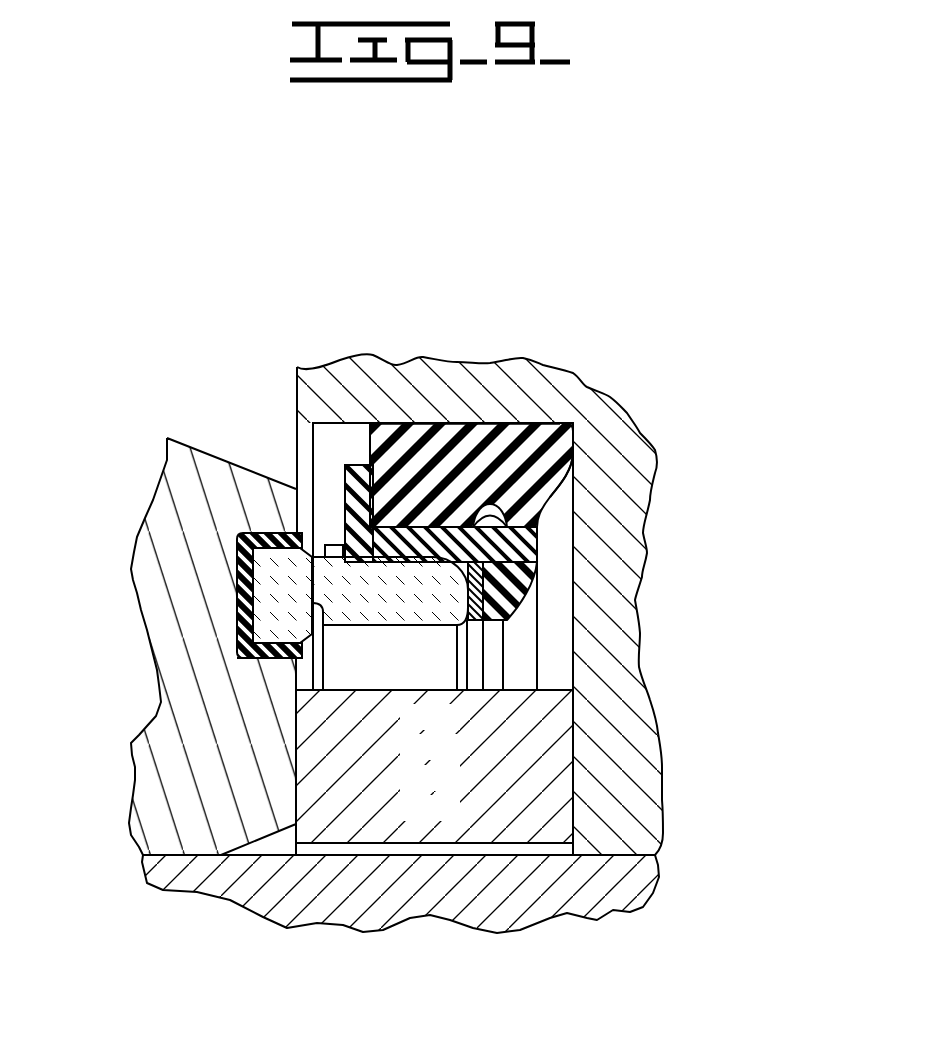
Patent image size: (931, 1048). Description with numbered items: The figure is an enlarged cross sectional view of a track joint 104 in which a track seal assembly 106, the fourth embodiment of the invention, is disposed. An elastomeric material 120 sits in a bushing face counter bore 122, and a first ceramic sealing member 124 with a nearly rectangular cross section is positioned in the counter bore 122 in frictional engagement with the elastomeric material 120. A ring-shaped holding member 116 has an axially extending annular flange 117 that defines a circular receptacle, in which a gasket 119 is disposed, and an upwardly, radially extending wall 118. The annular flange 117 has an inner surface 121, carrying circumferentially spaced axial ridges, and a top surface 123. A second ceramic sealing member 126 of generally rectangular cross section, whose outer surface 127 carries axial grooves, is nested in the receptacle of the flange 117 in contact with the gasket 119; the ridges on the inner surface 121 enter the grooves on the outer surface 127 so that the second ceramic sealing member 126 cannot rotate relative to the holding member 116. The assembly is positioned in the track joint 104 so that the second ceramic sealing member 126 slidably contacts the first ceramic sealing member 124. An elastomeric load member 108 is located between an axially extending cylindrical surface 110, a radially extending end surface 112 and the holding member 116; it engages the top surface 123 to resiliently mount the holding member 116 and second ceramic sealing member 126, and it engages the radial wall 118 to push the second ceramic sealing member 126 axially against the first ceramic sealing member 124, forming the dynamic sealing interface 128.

The track joint 104 is at (285, 460).
The track seal assembly 106 is at (347, 448).
The elastomeric load member 108 is at (542, 433).
The axial extending cylindrical surface 110 is at (452, 437).
The radially extending end surface 112 is at (575, 452).
The holding member 116 is at (495, 672).
The axially extending annular flange 117 is at (540, 538).
The radially extending wall 118 is at (347, 488).
The gasket 119 is at (470, 610).
The elastomeric material 120 is at (263, 656).
The inner surface 121 is at (517, 590).
The bushing face counter bore 122 is at (227, 589).
The top surface 123 is at (525, 498).
The first ceramic sealing member 124 is at (274, 622).
The second ceramic sealing member 126 is at (395, 598).
The outer surface 127 is at (332, 553).
The dynamic sealing interface 128 is at (345, 622).